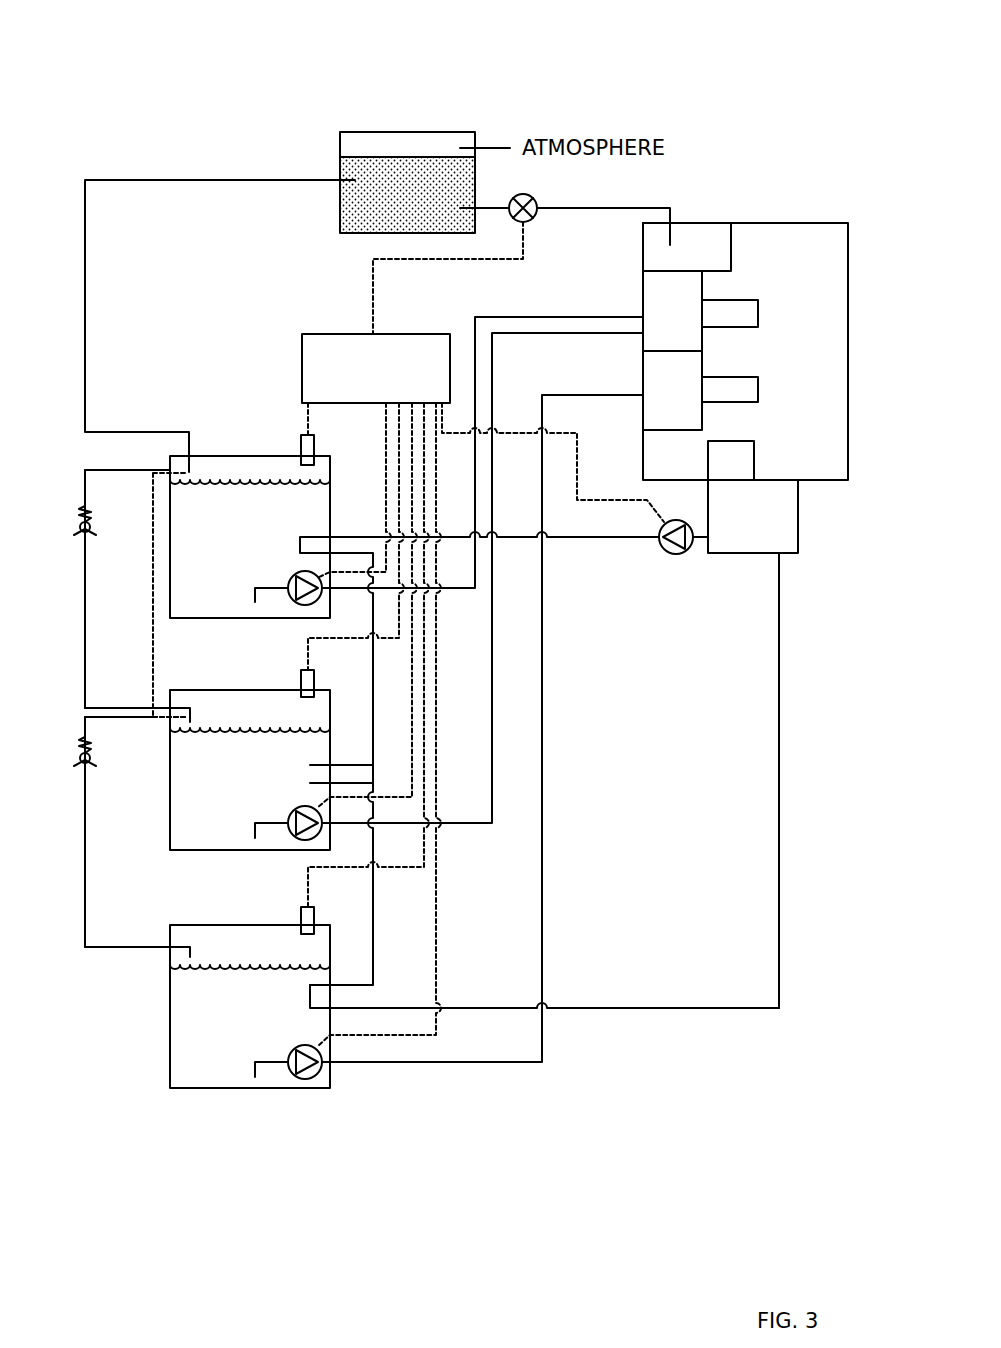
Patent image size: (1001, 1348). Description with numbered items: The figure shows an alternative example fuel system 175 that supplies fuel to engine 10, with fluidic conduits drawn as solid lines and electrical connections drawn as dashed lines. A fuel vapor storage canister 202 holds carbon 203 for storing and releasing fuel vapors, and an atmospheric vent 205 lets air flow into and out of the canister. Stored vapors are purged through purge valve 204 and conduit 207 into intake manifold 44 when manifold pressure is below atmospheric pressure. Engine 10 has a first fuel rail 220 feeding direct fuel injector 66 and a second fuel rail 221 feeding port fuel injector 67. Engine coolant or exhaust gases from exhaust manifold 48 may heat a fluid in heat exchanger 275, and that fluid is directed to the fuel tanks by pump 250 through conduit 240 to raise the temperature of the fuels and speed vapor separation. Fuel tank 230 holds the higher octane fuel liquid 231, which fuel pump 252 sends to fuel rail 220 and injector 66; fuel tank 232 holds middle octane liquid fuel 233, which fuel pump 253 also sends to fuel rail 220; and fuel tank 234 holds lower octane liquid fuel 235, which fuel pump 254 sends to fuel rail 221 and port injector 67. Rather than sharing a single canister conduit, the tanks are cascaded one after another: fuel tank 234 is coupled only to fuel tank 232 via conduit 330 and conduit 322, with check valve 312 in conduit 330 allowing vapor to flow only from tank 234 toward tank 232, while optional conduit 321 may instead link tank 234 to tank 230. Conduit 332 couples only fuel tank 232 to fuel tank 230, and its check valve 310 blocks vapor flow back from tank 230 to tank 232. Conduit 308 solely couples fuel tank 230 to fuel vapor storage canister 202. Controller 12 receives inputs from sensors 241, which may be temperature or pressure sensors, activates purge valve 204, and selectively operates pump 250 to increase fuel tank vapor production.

The fuel system 175 is at (114, 38).
The fuel vapor storage canister 202 is at (340, 132).
The carbon 203 is at (407, 194).
The purge valve 204 is at (528, 195).
The atmospheric vent 205 is at (488, 148).
The conduit 207 is at (560, 212).
The engine 10 is at (848, 298).
The intake manifold 44 is at (687, 247).
The first fuel rail 220 is at (672, 311).
The second fuel rail 221 is at (672, 390).
The direct fuel injector 66 is at (730, 314).
The port fuel injector 67 is at (730, 391).
The exhaust manifold 48 is at (731, 460).
The heat exchanger 275 is at (753, 744).
The controller 12 is at (412, 312).
The conduit 308 is at (86, 242).
The sensors 241 is at (301, 448).
The fuel tank 230 is at (190, 456).
The fuel liquid 231 is at (250, 506).
The check valve 310 is at (91, 523).
The fuel pump 252 is at (292, 575).
The conduit 321 is at (152, 620).
The conduit 332 is at (85, 665).
The fuel tank 232 is at (172, 690).
The liquid fuel 233 is at (250, 748).
The conduit 322 is at (166, 720).
The check valve 312 is at (91, 765).
The fuel pump 253 is at (292, 810).
The conduit 330 is at (85, 880).
The fuel tank 234 is at (172, 925).
The liquid fuel 235 is at (474, 986).
The fuel pump 254 is at (290, 1048).
The conduit 240 is at (577, 540).
The pump 250 is at (670, 555).